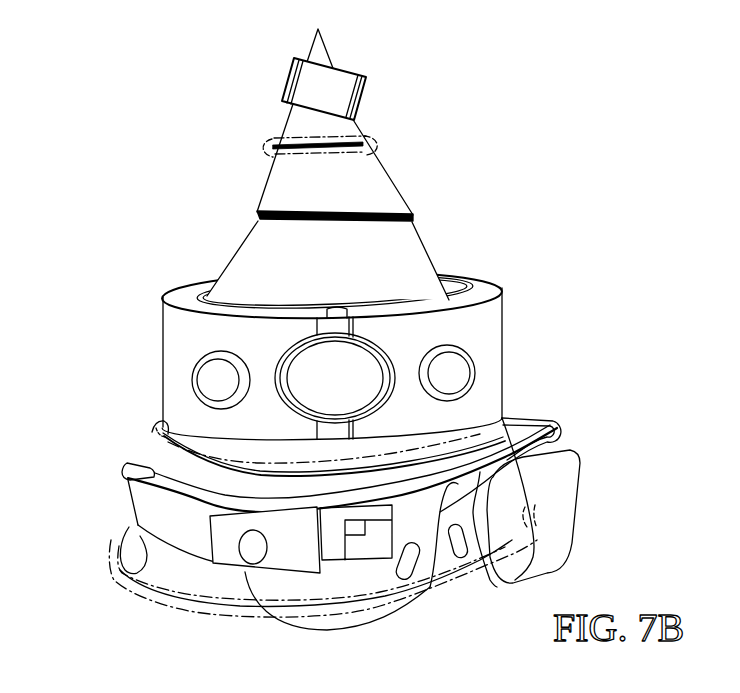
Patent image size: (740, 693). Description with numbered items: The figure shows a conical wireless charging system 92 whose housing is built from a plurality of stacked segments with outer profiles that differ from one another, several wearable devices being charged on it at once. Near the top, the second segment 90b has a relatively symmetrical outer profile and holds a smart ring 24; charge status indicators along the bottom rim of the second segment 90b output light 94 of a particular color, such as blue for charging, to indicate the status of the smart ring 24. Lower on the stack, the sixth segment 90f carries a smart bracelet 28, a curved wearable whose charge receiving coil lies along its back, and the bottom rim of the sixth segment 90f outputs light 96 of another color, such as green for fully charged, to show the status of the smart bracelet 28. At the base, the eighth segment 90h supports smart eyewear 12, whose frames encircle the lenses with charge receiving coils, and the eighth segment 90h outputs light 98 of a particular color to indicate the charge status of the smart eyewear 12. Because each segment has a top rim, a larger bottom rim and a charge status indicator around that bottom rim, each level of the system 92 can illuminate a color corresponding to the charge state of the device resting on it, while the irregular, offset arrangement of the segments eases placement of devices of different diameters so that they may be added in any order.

The smart eyewear 12 is at (168, 525).
The smart ring 24 is at (287, 82).
The smart bracelet 28 is at (487, 288).
The second segment 90b is at (297, 112).
The sixth segment 90f is at (440, 443).
The eighth segment 90h is at (157, 485).
The wireless charging system 92 is at (400, 59).
The light 94 is at (384, 147).
The light 96 is at (152, 427).
The light 98 is at (477, 586).